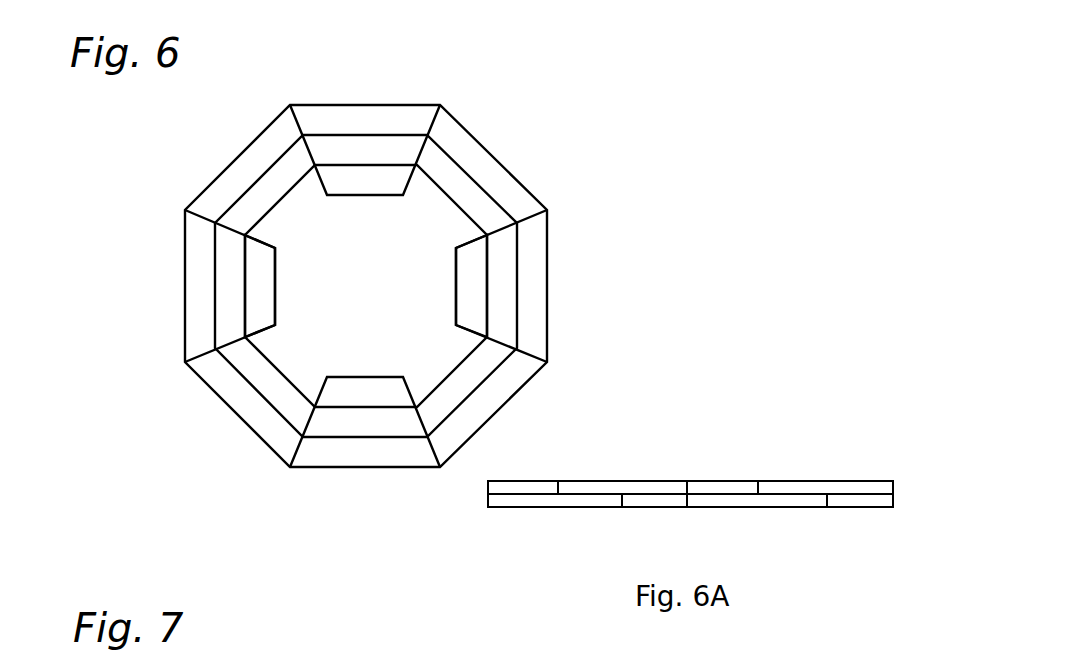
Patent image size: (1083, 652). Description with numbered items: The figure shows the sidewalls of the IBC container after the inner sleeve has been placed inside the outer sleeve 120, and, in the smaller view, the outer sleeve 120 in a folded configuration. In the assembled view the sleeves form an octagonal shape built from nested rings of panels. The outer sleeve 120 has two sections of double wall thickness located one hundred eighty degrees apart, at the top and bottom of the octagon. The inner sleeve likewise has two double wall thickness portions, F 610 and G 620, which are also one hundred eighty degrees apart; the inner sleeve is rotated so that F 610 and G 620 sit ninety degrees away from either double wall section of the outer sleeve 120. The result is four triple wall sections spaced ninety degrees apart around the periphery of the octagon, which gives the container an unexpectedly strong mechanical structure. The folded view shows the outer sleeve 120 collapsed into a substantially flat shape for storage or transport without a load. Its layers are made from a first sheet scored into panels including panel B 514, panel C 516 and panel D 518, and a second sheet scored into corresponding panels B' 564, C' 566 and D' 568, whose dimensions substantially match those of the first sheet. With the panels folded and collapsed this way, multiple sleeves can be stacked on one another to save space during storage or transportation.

In FIG. 6, the outer sleeve 120 is at (556, 144).
In FIG. 6A, the outer sleeve 120 is at (814, 436).
In FIG. 6, the double wall thickness portion F 610 is at (253, 268).
In FIG. 6, the double wall thickness portion G 620 is at (470, 265).
In FIG. 6A, the panel B 514 is at (520, 480).
In FIG. 6A, the panel C 516 is at (615, 481).
In FIG. 6A, the panel D 518 is at (718, 480).
In FIG. 6A, the panel B' 564 is at (657, 508).
In FIG. 6A, the panel C' 566 is at (762, 508).
In FIG. 6A, the panel D' 568 is at (865, 508).